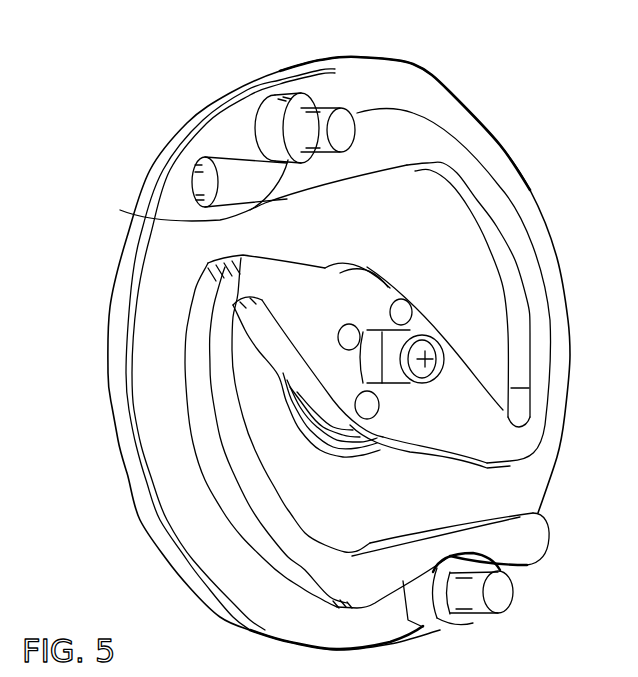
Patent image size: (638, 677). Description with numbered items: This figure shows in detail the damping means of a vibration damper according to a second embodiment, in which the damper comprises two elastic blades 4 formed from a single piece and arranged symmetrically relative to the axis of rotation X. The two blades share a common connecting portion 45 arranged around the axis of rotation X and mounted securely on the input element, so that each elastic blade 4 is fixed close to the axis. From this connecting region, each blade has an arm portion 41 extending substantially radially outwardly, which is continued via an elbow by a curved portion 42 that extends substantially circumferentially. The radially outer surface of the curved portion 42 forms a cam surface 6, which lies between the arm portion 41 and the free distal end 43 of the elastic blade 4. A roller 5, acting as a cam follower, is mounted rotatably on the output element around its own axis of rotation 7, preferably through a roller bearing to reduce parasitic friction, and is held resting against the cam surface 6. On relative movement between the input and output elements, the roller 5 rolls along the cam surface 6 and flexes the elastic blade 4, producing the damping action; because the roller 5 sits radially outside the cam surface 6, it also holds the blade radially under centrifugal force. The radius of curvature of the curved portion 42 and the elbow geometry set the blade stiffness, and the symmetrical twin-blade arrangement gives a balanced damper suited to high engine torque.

The elastic blade 4 is at (483, 192).
The roller 5 is at (303, 95).
The cam surface 6 is at (153, 220).
The axis of rotation 7 is at (343, 120).
The arm portion 41 is at (306, 313).
The curved portion 42 is at (527, 270).
The free distal end 43 is at (188, 183).
The common connecting portion 45 is at (368, 313).
The axis of rotation X is at (433, 353).